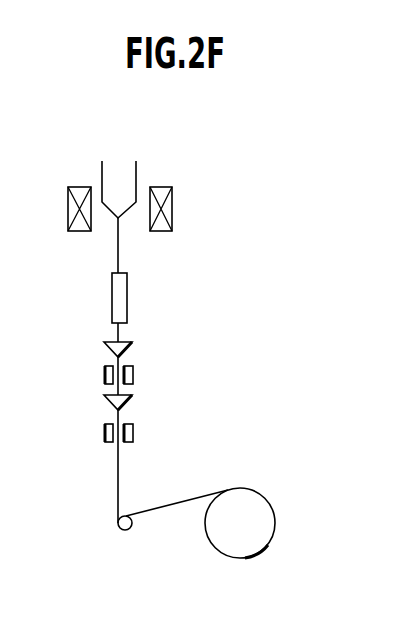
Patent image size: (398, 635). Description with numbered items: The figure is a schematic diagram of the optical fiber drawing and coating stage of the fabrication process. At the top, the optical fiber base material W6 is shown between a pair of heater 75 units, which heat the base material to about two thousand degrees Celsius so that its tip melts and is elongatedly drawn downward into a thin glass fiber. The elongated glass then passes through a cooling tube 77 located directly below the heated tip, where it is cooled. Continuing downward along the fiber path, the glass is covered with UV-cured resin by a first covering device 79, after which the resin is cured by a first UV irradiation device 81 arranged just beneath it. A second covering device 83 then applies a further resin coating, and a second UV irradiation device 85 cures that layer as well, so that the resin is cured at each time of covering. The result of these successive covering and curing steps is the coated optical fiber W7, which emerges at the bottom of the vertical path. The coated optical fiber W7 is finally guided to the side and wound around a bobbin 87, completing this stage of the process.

The optical fiber base material W6 is at (125, 178).
The heater 75 is at (68, 200).
The cooling tube 77 is at (128, 285).
The covering device 79 is at (133, 346).
The UV irradiation device 81 is at (133, 368).
The covering device 83 is at (133, 404).
The UV irradiation device 85 is at (133, 426).
The coated optical fiber W7 is at (118, 474).
The bobbin 87 is at (252, 507).